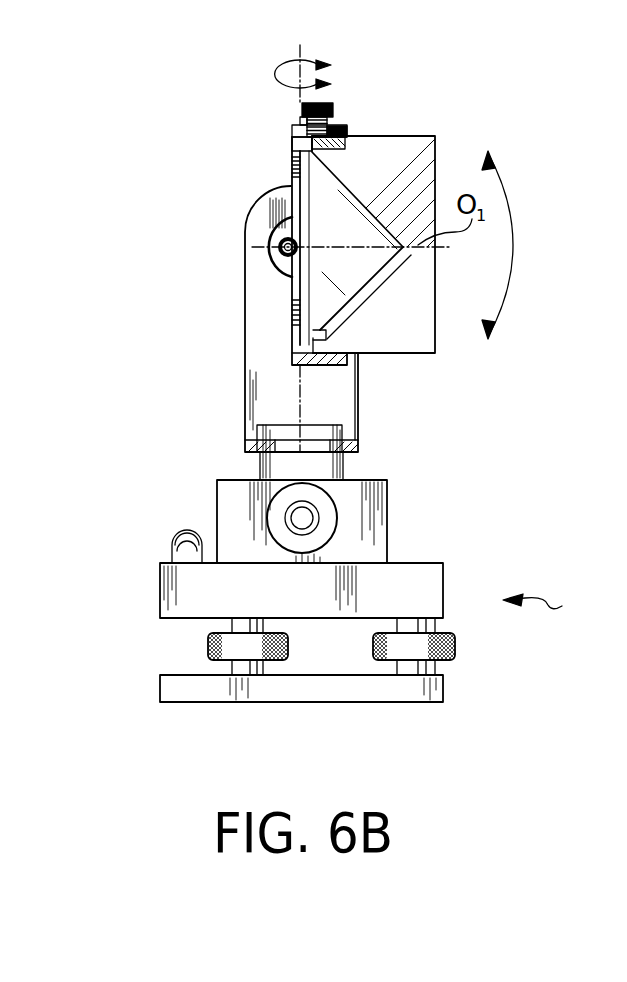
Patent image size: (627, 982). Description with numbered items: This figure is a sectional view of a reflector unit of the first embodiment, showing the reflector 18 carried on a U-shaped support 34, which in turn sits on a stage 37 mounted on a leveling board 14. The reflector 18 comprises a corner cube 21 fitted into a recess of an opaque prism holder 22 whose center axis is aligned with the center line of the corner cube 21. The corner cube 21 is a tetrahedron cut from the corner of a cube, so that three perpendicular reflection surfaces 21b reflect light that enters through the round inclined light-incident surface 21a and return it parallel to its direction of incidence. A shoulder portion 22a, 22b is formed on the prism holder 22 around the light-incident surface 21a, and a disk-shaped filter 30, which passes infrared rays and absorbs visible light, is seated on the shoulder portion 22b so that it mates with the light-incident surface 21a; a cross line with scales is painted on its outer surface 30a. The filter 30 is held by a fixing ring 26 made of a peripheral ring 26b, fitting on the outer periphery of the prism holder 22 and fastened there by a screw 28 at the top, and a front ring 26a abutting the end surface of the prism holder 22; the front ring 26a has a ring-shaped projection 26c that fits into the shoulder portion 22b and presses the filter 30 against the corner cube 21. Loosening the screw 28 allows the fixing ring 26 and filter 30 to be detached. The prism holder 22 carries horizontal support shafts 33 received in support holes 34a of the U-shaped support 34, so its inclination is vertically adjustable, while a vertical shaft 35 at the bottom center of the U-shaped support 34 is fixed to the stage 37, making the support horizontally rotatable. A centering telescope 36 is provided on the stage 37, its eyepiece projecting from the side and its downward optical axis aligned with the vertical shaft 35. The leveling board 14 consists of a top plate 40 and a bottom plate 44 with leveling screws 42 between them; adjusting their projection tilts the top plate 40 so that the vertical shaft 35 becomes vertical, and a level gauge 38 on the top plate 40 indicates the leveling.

The leveling board 14 is at (585, 595).
The reflector 18 is at (523, 192).
The corner cube 21 is at (338, 278).
The light-incident surface 21a is at (292, 322).
The reflection surfaces 21b is at (380, 272).
The prism holder 22 is at (420, 160).
The shoulder portion 22a is at (300, 118).
The shoulder portion 22b is at (292, 350).
The fixing ring 26 is at (292, 124).
The front ring 26a is at (292, 131).
The peripheral ring 26b is at (347, 128).
The ring-shaped projection 26c is at (350, 138).
The screw 28 is at (333, 104).
The filter 30 is at (300, 158).
The outer surface 30a is at (272, 273).
The support shafts 33 is at (278, 250).
The U-shaped support 34 is at (352, 405).
The support holes 34a is at (262, 226).
The vertical shaft 35 is at (347, 466).
The centering telescope 36 is at (268, 527).
The stage 37 is at (374, 525).
The level gauge 38 is at (178, 535).
The top plate 40 is at (446, 597).
The leveling screws 42 is at (205, 650).
The bottom plate 44 is at (342, 693).